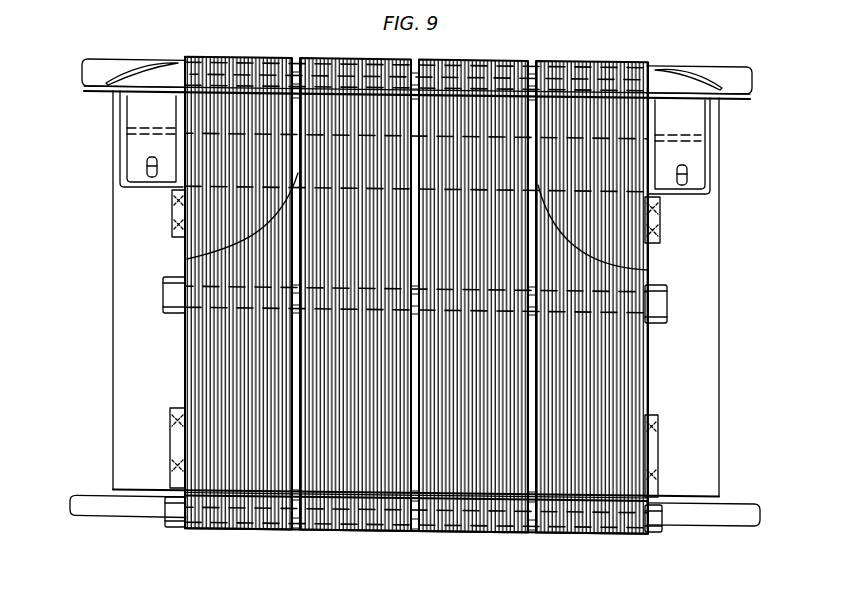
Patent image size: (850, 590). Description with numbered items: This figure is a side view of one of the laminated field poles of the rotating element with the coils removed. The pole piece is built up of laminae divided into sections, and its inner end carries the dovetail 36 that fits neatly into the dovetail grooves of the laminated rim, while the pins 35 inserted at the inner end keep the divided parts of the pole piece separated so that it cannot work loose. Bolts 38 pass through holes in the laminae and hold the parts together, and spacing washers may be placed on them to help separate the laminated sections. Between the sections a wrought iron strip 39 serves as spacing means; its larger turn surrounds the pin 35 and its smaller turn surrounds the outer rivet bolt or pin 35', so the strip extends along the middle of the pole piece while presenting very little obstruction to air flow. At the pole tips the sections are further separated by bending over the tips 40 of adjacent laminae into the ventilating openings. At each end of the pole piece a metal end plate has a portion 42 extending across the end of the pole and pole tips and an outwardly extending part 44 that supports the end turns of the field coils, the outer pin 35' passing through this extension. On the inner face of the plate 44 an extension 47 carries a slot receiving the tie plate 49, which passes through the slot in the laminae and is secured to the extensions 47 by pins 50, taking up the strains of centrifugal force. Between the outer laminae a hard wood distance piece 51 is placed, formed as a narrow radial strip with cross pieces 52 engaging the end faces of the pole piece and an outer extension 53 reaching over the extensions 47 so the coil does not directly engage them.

The pin 35 is at (415, 531).
The outer rivet bolt or pin 35' is at (415, 76).
The dovetail 36 is at (578, 530).
The bolt 38 is at (665, 305).
The wrought iron strip 39 is at (297, 460).
The tips 40 is at (295, 77).
The portion of end plate 42 is at (178, 72).
The outwardly extending part 44 is at (140, 89).
The extension 47 is at (135, 150).
The tie plate 49 is at (187, 259).
The pin 50 is at (148, 168).
The distance piece 51 is at (416, 294).
The cross pieces 52 is at (173, 212).
The outer extension 53 is at (113, 127).